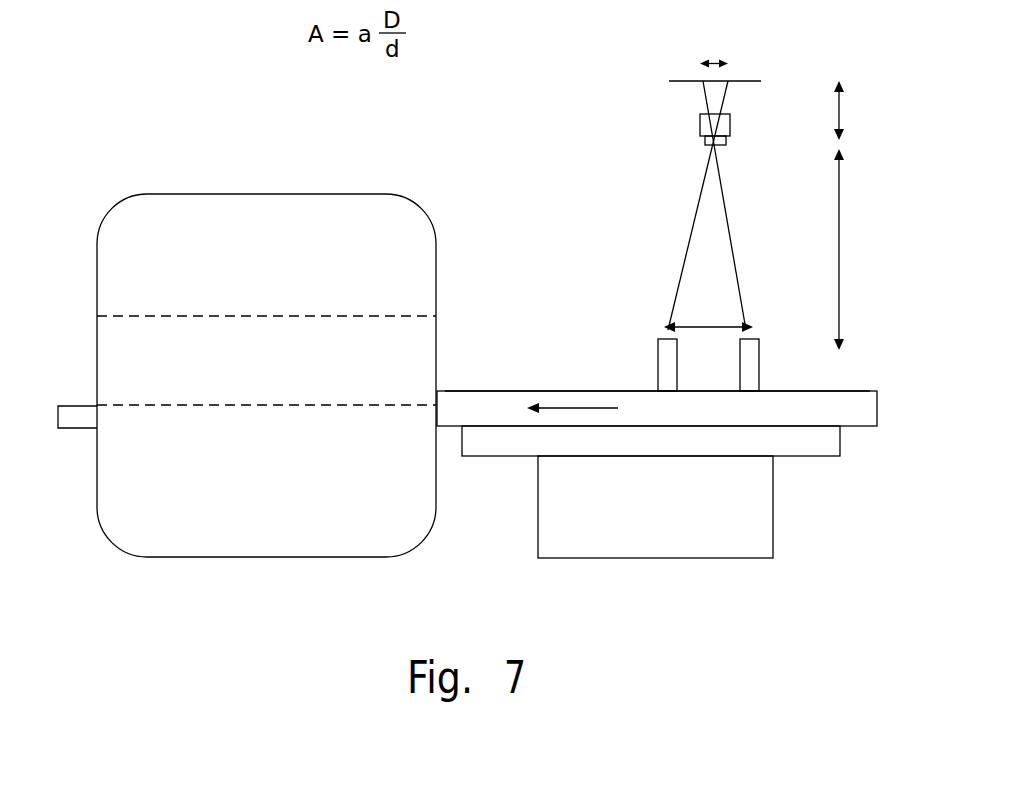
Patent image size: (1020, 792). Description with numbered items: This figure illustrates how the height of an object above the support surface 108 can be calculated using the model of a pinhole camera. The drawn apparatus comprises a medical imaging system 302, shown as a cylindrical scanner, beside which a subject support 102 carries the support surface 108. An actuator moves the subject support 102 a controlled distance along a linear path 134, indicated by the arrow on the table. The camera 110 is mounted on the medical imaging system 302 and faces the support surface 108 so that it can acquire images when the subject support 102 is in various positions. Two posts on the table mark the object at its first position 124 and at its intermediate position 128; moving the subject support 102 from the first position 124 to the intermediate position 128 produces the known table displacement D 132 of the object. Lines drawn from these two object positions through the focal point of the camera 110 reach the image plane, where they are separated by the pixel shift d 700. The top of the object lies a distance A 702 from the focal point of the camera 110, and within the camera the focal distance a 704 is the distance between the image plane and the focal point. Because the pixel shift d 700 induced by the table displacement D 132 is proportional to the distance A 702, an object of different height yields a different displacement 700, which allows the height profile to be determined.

The medical imaging system 302 is at (104, 219).
The subject support 102 is at (853, 430).
The support surface 108 is at (602, 380).
The linear path 134 is at (570, 400).
The intermediate position 128 is at (680, 357).
The first position 124 is at (761, 366).
The displacement D 132 is at (708, 327).
The camera 110 is at (698, 126).
The pixel shift d 700 is at (712, 83).
The focal distance a 704 is at (840, 105).
The distance A 702 is at (840, 200).